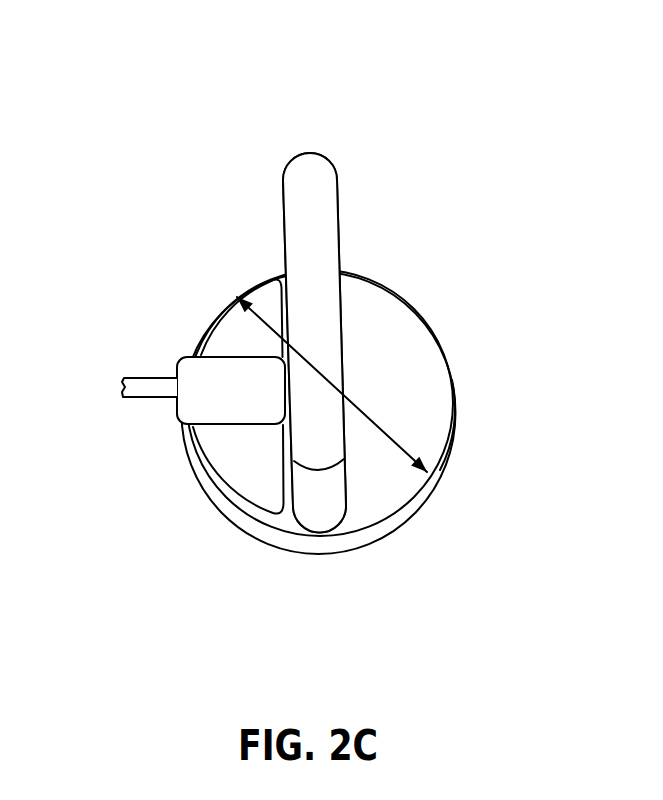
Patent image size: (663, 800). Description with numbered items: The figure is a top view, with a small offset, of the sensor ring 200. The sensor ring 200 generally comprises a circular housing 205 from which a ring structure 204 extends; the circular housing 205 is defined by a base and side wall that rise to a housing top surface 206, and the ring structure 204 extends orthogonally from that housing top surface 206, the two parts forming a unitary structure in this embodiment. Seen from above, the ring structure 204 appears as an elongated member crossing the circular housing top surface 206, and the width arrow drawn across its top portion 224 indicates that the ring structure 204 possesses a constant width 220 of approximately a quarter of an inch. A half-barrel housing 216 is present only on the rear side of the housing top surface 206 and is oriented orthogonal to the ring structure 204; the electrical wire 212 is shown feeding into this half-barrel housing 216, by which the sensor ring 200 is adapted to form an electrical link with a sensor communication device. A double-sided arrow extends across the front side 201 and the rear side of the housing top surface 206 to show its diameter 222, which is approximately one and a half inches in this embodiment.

The sensor ring 200 is at (330, 66).
The front side 201 is at (403, 389).
The ring structure 204 is at (283, 238).
The circular housing 205 is at (357, 537).
The housing top surface 206 is at (392, 335).
The electrical wire 212 is at (171, 388).
The half-barrel housing 216 is at (228, 367).
The constant width 220 is at (328, 153).
The diameter 222 is at (383, 423).
The top portion 224 is at (312, 249).